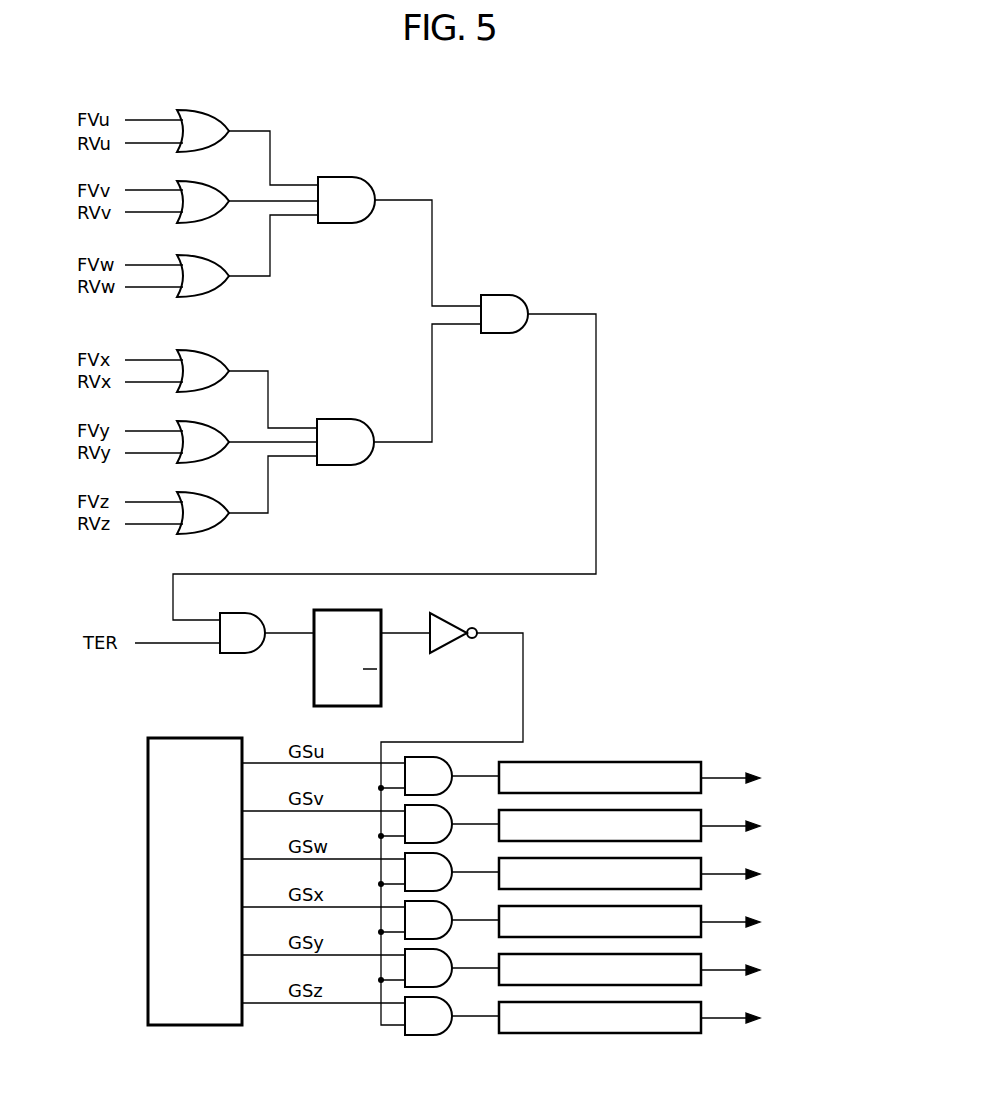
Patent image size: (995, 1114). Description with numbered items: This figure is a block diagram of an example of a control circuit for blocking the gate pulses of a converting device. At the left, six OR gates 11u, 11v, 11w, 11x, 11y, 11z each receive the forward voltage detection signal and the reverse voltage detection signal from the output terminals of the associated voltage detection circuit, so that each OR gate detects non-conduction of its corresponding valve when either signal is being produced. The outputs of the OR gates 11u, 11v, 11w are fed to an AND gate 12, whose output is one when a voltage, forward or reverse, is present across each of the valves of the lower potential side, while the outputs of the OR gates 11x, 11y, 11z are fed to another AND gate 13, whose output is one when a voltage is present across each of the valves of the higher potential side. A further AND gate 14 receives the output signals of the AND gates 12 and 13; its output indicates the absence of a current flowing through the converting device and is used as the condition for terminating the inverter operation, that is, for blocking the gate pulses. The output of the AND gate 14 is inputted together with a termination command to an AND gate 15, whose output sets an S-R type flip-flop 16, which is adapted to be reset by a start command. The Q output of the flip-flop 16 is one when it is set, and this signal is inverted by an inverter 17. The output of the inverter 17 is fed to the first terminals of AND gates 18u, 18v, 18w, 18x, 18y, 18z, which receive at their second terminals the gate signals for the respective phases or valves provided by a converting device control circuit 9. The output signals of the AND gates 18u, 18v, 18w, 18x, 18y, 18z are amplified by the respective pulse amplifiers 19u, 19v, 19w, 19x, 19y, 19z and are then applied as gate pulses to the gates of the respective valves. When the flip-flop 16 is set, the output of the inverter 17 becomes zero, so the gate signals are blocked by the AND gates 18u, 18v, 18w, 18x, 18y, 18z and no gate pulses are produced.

The converting device control circuit 9 is at (189, 738).
The OR gate 11u is at (203, 110).
The OR gate 11v is at (210, 181).
The OR gate 11w is at (208, 255).
The OR gate 11x is at (223, 365).
The OR gate 11y is at (206, 421).
The OR gate 11z is at (204, 492).
The AND gate 12 is at (340, 177).
The AND gate 13 is at (335, 419).
The AND gate 14 is at (494, 295).
The AND gate 15 is at (259, 618).
The S-R type flip-flop 16 is at (383, 612).
The inverter 17 is at (452, 621).
The AND gate 18u is at (445, 758).
The AND gate 18v is at (445, 806).
The AND gate 18w is at (445, 854).
The AND gate 18x is at (445, 902).
The AND gate 18y is at (445, 950).
The AND gate 18z is at (445, 998).
The pulse amplifier 19u is at (672, 762).
The pulse amplifier 19v is at (697, 810).
The pulse amplifier 19w is at (697, 858).
The pulse amplifier 19x is at (697, 906).
The pulse amplifier 19y is at (697, 954).
The pulse amplifier 19z is at (697, 1002).